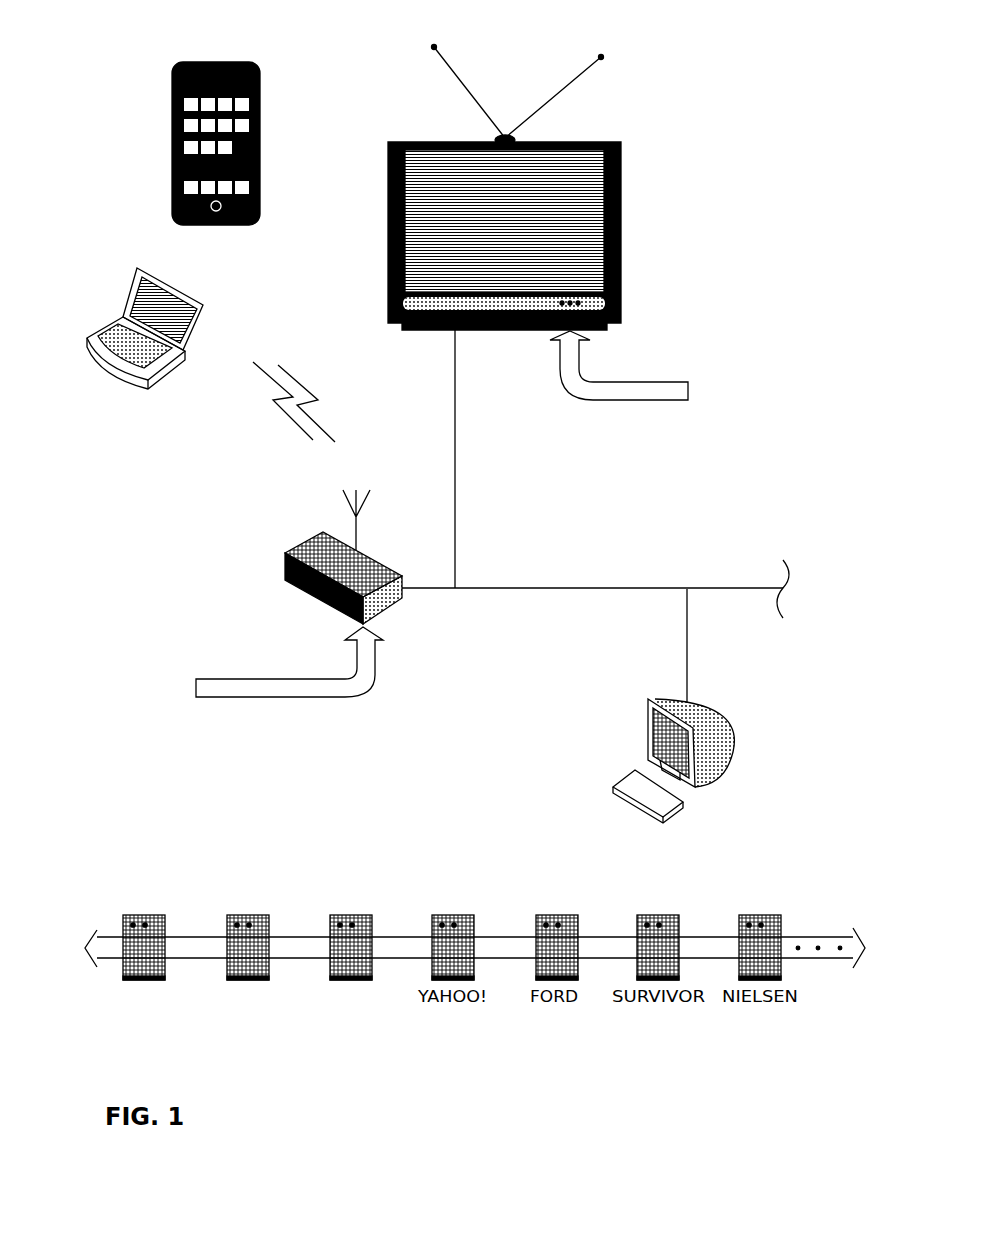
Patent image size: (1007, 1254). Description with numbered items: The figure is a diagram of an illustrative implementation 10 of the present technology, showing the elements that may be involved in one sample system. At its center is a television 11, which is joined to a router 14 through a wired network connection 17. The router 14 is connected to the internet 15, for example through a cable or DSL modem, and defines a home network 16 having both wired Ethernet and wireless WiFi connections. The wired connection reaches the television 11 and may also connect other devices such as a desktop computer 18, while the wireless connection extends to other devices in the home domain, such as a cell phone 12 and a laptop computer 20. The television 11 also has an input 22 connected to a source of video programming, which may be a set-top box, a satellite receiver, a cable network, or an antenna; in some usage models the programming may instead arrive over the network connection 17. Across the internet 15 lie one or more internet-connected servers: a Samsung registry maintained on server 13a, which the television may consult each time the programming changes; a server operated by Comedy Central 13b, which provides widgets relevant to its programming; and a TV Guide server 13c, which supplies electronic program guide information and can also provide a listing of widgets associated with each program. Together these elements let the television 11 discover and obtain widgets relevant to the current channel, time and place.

The illustrative implementation 10 is at (747, 143).
The television 11 is at (622, 252).
The cell phone 12 is at (262, 230).
The Samsung registry server 13a is at (143, 915).
The Comedy Central server 13b is at (250, 915).
The TV Guide server 13c is at (355, 915).
The router 14 is at (395, 610).
The internet 15 is at (203, 700).
The home network 16 is at (553, 590).
The network connection 17 is at (456, 333).
The desktop computer 18 is at (710, 778).
The laptop computer 20 is at (157, 377).
The input 22 is at (582, 340).